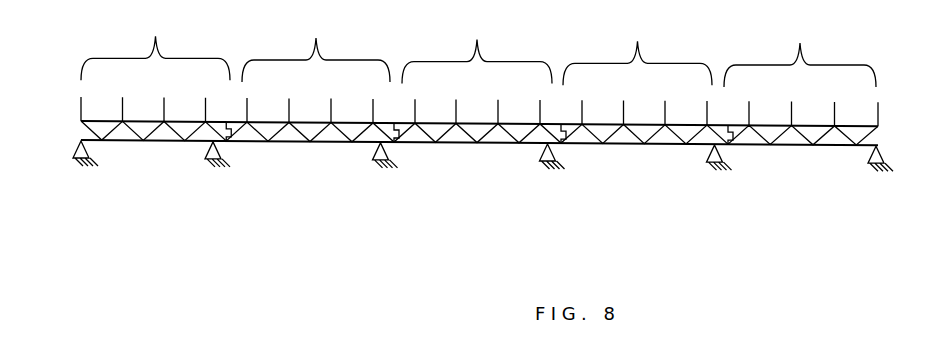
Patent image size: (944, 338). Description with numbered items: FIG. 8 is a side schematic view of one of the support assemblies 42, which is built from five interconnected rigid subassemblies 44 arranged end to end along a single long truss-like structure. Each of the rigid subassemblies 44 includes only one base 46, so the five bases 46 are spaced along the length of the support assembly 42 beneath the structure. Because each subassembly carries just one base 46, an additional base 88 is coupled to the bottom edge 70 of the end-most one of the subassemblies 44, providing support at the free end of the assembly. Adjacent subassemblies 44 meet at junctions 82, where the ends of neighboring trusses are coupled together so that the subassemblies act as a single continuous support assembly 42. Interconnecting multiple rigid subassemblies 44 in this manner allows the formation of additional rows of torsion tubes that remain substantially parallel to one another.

The support assembly 42 is at (462, 154).
The rigid subassembly 44 is at (478, 49).
The base 46 is at (206, 160).
The bottom edge 70 is at (160, 142).
The junction 82 is at (731, 147).
The additional base 88 is at (74, 159).